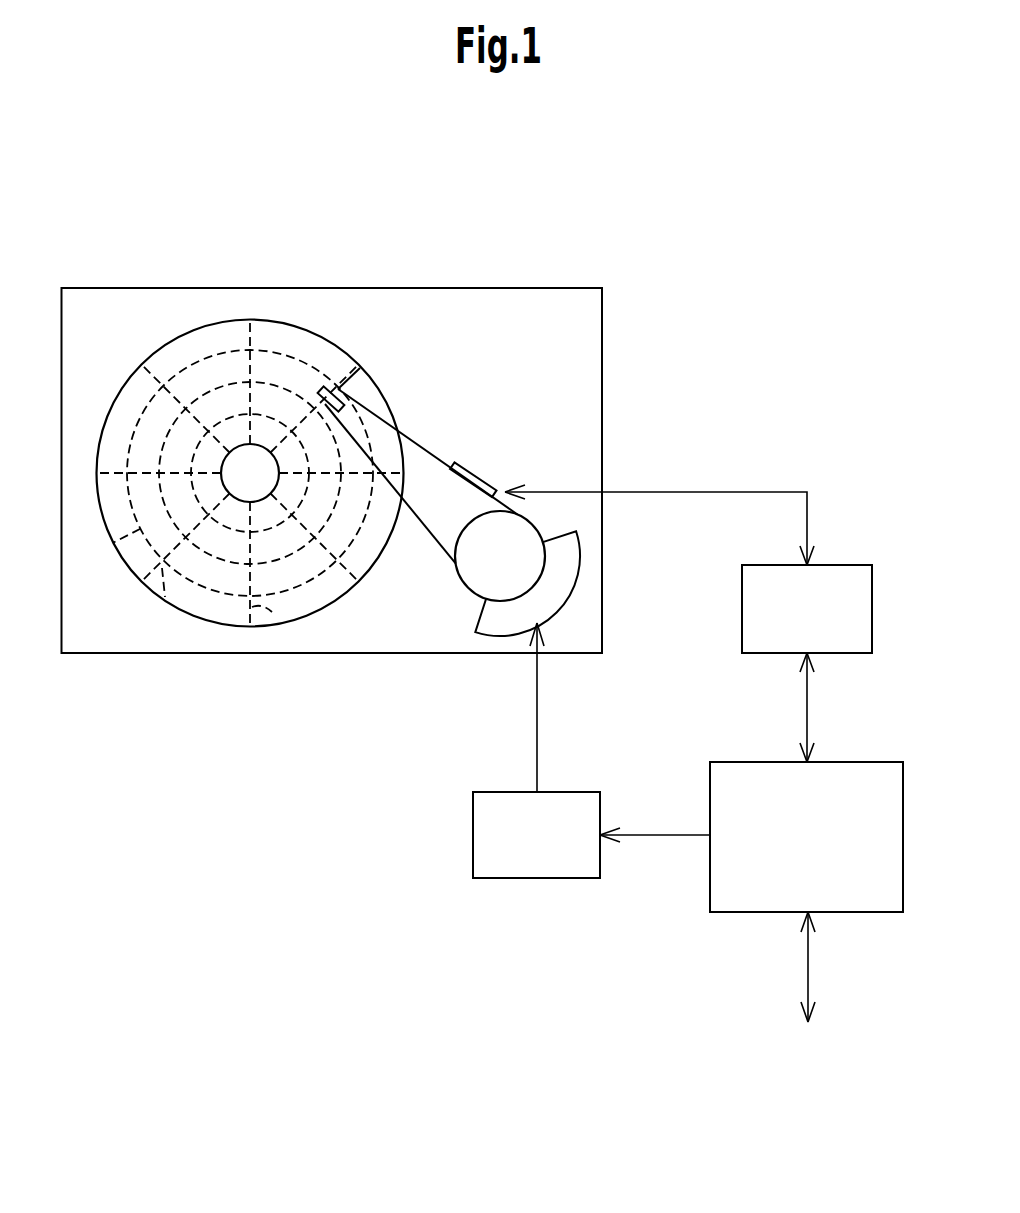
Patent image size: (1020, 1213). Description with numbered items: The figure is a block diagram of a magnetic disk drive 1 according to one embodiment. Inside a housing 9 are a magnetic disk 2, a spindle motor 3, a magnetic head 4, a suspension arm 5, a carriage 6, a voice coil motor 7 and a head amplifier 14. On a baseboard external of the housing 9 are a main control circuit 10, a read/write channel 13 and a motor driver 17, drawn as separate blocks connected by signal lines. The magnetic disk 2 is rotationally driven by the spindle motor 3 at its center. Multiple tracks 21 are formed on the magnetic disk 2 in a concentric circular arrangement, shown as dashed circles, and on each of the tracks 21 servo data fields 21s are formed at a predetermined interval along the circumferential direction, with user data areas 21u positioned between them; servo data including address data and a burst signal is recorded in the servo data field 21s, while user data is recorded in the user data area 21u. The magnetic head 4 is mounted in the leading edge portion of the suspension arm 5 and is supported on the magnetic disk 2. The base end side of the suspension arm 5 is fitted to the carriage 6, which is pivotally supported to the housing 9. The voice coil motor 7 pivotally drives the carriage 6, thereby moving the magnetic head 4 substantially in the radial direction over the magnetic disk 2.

The magnetic disk drive 1 is at (781, 212).
The magnetic disk 2 is at (173, 353).
The spindle motor 3 is at (232, 468).
The magnetic head 4 is at (323, 388).
The suspension arm 5 is at (408, 454).
The carriage 6 is at (443, 537).
The voice coil motor 7 is at (495, 622).
The housing 9 is at (505, 288).
The main control circuit 10 is at (845, 762).
The read/write channel 13 is at (843, 565).
The head amplifier 14 is at (470, 478).
The motor driver 17 is at (543, 879).
The tracks 21 is at (116, 553).
The user data area 21u is at (165, 597).
The servo data field 21s is at (272, 612).